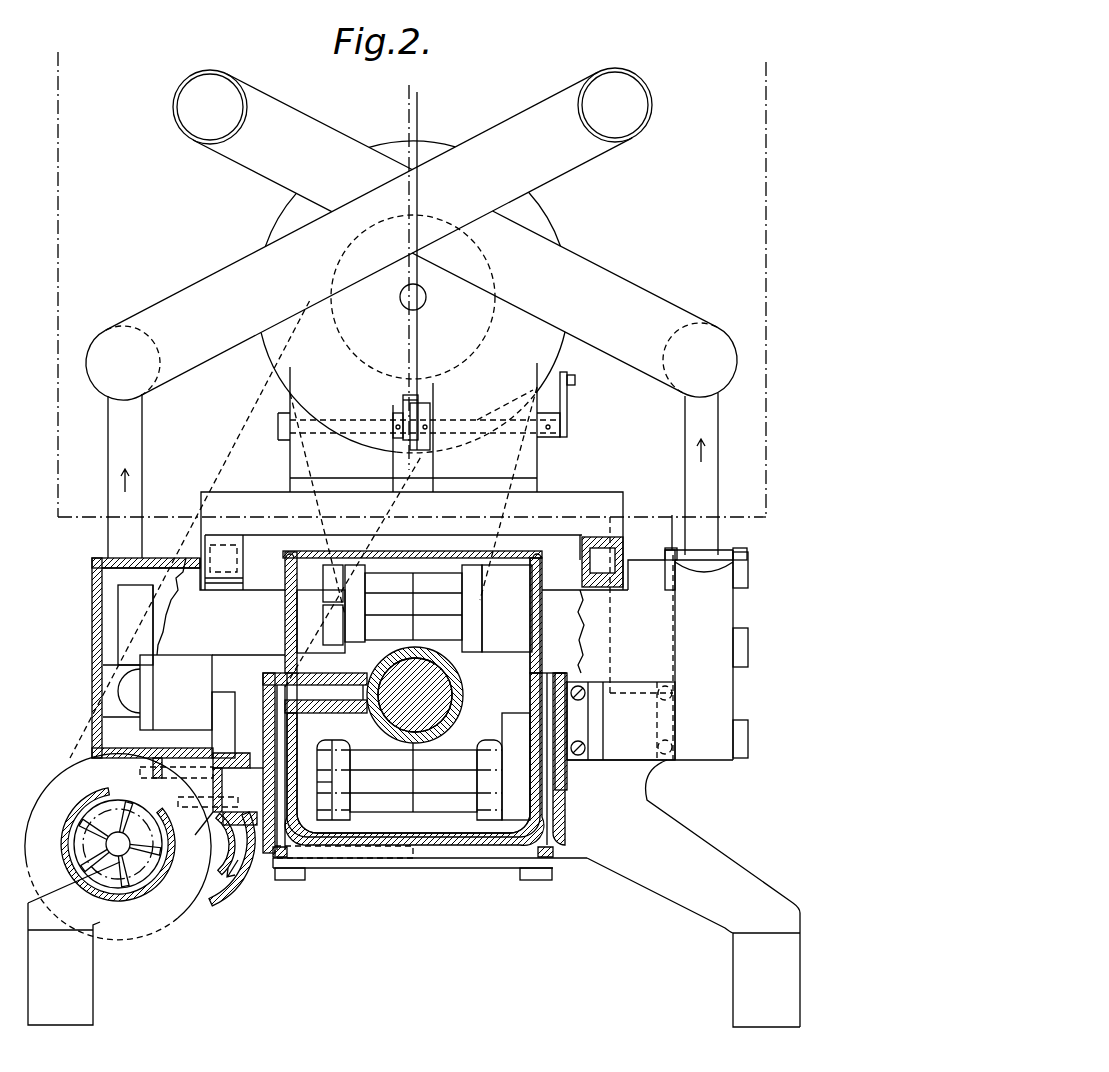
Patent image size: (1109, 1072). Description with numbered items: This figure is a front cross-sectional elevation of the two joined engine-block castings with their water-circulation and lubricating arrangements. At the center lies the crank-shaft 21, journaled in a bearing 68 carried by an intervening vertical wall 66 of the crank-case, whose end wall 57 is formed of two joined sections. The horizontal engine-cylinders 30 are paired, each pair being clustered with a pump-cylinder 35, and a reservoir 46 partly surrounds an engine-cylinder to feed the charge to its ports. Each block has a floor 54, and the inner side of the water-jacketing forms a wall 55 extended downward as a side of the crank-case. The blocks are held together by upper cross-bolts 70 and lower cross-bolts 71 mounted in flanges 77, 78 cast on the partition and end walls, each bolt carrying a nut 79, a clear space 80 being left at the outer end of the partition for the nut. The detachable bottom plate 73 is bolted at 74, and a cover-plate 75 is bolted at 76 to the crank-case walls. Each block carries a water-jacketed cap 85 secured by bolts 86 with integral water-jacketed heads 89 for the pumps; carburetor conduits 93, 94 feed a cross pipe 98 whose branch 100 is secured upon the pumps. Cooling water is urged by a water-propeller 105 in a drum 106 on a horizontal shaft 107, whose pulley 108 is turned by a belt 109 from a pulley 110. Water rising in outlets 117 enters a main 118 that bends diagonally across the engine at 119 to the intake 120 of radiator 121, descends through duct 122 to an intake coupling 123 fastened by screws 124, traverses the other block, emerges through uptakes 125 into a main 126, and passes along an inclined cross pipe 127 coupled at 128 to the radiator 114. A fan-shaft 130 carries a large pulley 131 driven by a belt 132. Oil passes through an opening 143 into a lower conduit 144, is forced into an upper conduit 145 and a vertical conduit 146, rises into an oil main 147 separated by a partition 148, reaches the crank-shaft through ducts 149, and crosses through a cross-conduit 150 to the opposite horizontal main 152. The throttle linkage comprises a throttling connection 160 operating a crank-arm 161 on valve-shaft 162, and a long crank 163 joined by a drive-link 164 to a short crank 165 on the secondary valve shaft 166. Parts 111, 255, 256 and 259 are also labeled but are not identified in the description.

The crank-shaft 21 is at (440, 672).
The engine-cylinders 30 is at (185, 655).
The pump-cylinder 35 is at (568, 581).
The reservoir 46 is at (223, 725).
The floor 54 is at (223, 735).
The wall 55 is at (290, 580).
The end wall 57 is at (415, 692).
The intervening vertical wall 66 is at (414, 701).
The bearing 68 is at (382, 665).
The upper cross-bolts 70 is at (413, 606).
The lower cross-bolts 71 is at (413, 777).
The bottom plate of the crank-case 73 is at (468, 868).
The bolts 74 is at (289, 880).
The cover-plate 75 is at (438, 551).
The bolts 76 is at (288, 553).
The ears or flanges 77 is at (412, 608).
The ears or flanges 78 is at (480, 783).
The nut 79 is at (330, 740).
The clear space 80 is at (343, 730).
The water-jacketed cap 85 is at (95, 604).
The bolts 86 is at (748, 578).
The water-jacketed heads 89 is at (152, 644).
The conduit 93 is at (537, 458).
The conduit 94 is at (290, 457).
The cross pipe 98 is at (248, 492).
The branch 100 is at (243, 565).
The water-propeller 105 is at (118, 844).
The drum 106 is at (128, 780).
The pump-shaft 107 is at (120, 844).
The pulley 108 is at (118, 847).
The belt 109 is at (240, 453).
The pulley 110 is at (486, 340).
The line 111 is at (188, 752).
The radiator 114 is at (409, 124).
The outlets 117 is at (125, 476).
The main 118 is at (151, 342).
The diagonal bend 119 is at (230, 262).
The intake 120 is at (600, 139).
The radiator 121 is at (417, 108).
The duct 122 is at (672, 530).
The intake coupling 123 is at (651, 669).
The screws 124 is at (672, 740).
The uptakes 125 is at (702, 474).
The main 126 is at (665, 348).
The inclined cross pipe 127 is at (606, 268).
The coupling 128 is at (243, 124).
The fan-shaft 130 is at (426, 298).
The large pulley 131 is at (548, 218).
The belt 132 is at (311, 463).
The opening 143 is at (223, 835).
The lower conduit 144 is at (222, 892).
The upper conduit 145 is at (230, 801).
The vertical conduit 146 is at (565, 821).
The oil main 147 is at (263, 740).
The partition 148 is at (263, 694).
The ducts 149 is at (332, 692).
The cross-conduit 150 is at (452, 845).
The horizontal main 152 is at (518, 766).
The throttling connection 160 is at (575, 380).
The crank-arm 161 is at (567, 400).
The valve-shaft 162 is at (480, 413).
The long crank 163 is at (430, 408).
The drive-link 164 is at (418, 395).
The short crank 165 is at (403, 402).
The shaft 166 is at (364, 416).
The brace 255 is at (47, 893).
The leg 256 is at (693, 893).
The foot 259 is at (414, 965).